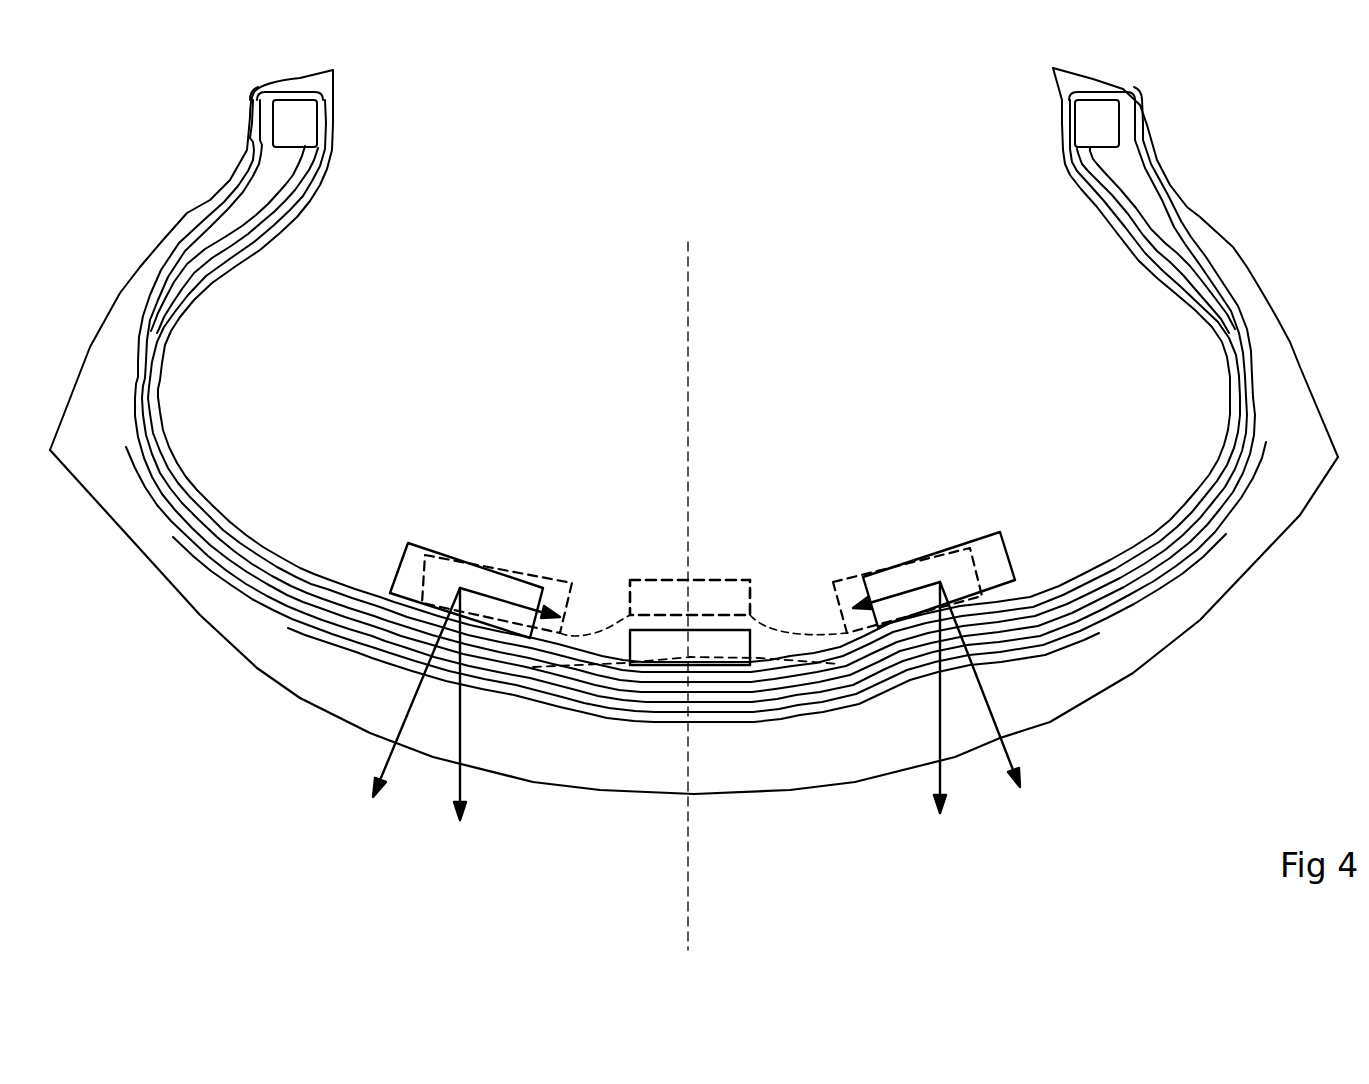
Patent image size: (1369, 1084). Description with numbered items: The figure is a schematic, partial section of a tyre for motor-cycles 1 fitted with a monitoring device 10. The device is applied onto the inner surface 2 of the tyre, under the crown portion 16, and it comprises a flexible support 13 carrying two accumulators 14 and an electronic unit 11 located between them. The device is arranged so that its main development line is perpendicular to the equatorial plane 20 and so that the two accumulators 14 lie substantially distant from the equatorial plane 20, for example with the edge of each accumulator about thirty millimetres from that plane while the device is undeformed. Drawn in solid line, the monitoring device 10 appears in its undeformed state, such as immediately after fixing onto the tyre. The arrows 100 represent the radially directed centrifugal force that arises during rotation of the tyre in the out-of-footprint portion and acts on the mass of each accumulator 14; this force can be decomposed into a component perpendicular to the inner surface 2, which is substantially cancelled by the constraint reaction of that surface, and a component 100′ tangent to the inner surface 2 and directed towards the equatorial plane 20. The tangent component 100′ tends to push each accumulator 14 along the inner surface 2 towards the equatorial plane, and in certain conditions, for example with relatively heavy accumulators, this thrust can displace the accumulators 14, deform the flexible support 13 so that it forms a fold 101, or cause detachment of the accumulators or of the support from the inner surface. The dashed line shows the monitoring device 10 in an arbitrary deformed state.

The tyre for motor-cycles 1 is at (1272, 148).
The inner surface 2 is at (1130, 540).
The monitoring device 10 is at (573, 476).
The electronic unit 11 is at (665, 630).
The flexible support 13 is at (382, 603).
The accumulators 14 is at (418, 557).
The crown portion 16 is at (313, 689).
The equatorial plane 20 is at (688, 257).
The centrifugal force 100 is at (463, 715).
The tangent component of the centrifugal force 100′ is at (487, 592).
The fold 101 is at (744, 616).